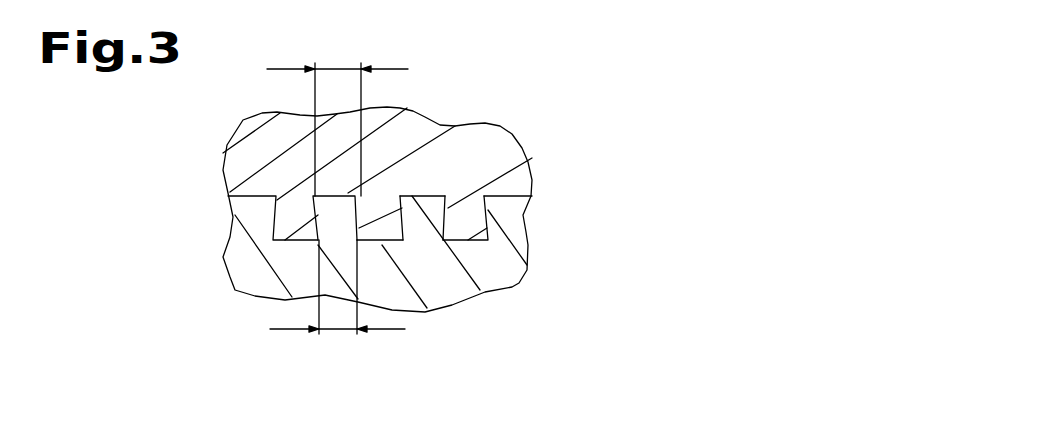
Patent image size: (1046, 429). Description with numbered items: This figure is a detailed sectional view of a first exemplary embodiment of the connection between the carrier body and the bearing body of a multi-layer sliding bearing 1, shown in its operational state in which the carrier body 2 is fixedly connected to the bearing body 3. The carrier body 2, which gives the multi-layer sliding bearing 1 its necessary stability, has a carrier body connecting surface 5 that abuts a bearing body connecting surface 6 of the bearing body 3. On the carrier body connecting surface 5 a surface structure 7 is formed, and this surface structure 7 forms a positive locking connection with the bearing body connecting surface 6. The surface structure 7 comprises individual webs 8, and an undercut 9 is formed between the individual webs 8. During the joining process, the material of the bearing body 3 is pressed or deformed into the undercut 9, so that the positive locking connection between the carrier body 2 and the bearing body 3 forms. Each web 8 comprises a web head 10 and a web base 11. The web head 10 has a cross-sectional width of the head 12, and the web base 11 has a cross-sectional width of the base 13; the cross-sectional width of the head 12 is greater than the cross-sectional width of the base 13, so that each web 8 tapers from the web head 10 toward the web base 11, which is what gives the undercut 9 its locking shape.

The multi-layer sliding bearing 1 is at (693, 120).
The carrier body 2 is at (257, 258).
The bearing body 3 is at (257, 157).
The carrier body connecting surface 5 is at (447, 183).
The bearing body connecting surface 6 is at (435, 248).
The surface structure 7 is at (521, 178).
The web 8 is at (337, 205).
The undercut 9 is at (380, 215).
The web head 10 is at (425, 183).
The web base 11 is at (413, 250).
The cross-sectional width of the head 12 is at (335, 68).
The cross-sectional width of the base 13 is at (338, 330).